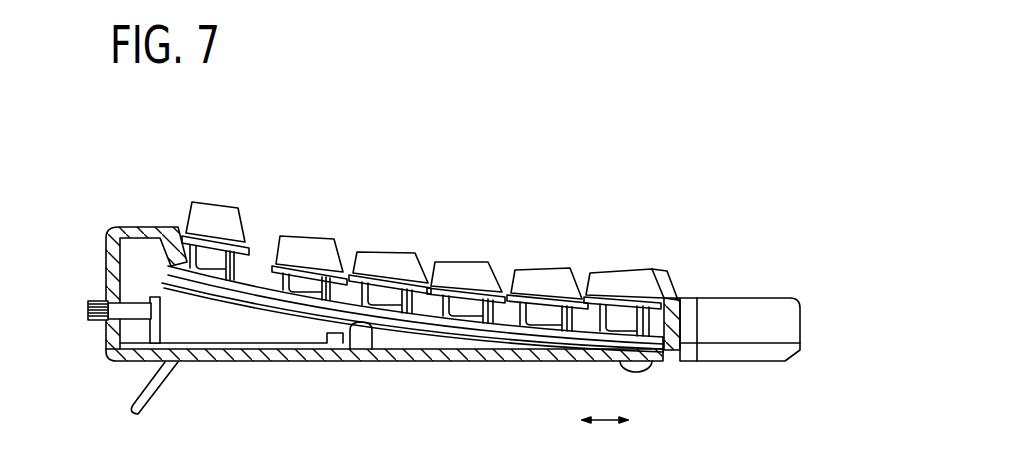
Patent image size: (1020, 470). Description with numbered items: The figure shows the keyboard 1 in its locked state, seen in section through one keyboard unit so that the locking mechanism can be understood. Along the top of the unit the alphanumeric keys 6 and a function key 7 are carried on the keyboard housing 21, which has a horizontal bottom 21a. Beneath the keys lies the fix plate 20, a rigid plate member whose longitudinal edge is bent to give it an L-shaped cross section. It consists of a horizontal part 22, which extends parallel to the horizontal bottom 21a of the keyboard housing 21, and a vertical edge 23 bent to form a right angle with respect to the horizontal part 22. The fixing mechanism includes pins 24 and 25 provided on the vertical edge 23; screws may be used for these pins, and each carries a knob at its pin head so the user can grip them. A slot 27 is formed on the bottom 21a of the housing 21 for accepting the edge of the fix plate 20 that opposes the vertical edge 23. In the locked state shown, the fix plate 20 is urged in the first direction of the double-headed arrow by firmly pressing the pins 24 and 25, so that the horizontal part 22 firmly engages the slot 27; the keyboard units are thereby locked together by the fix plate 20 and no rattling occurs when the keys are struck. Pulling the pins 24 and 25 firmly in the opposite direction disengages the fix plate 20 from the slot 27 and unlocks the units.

The keyboard 1 is at (406, 73).
The alphanumeric keys 6 is at (530, 275).
The function keys 7 is at (213, 217).
The fix plate 20 is at (203, 337).
The keyboard housing 21 is at (431, 316).
The horizontal bottom 21a is at (298, 362).
The horizontal part 22 is at (214, 346).
The vertical edge 23 is at (185, 363).
The pin 24 is at (99, 249).
The pin 25 is at (92, 298).
The slot 27 is at (357, 334).